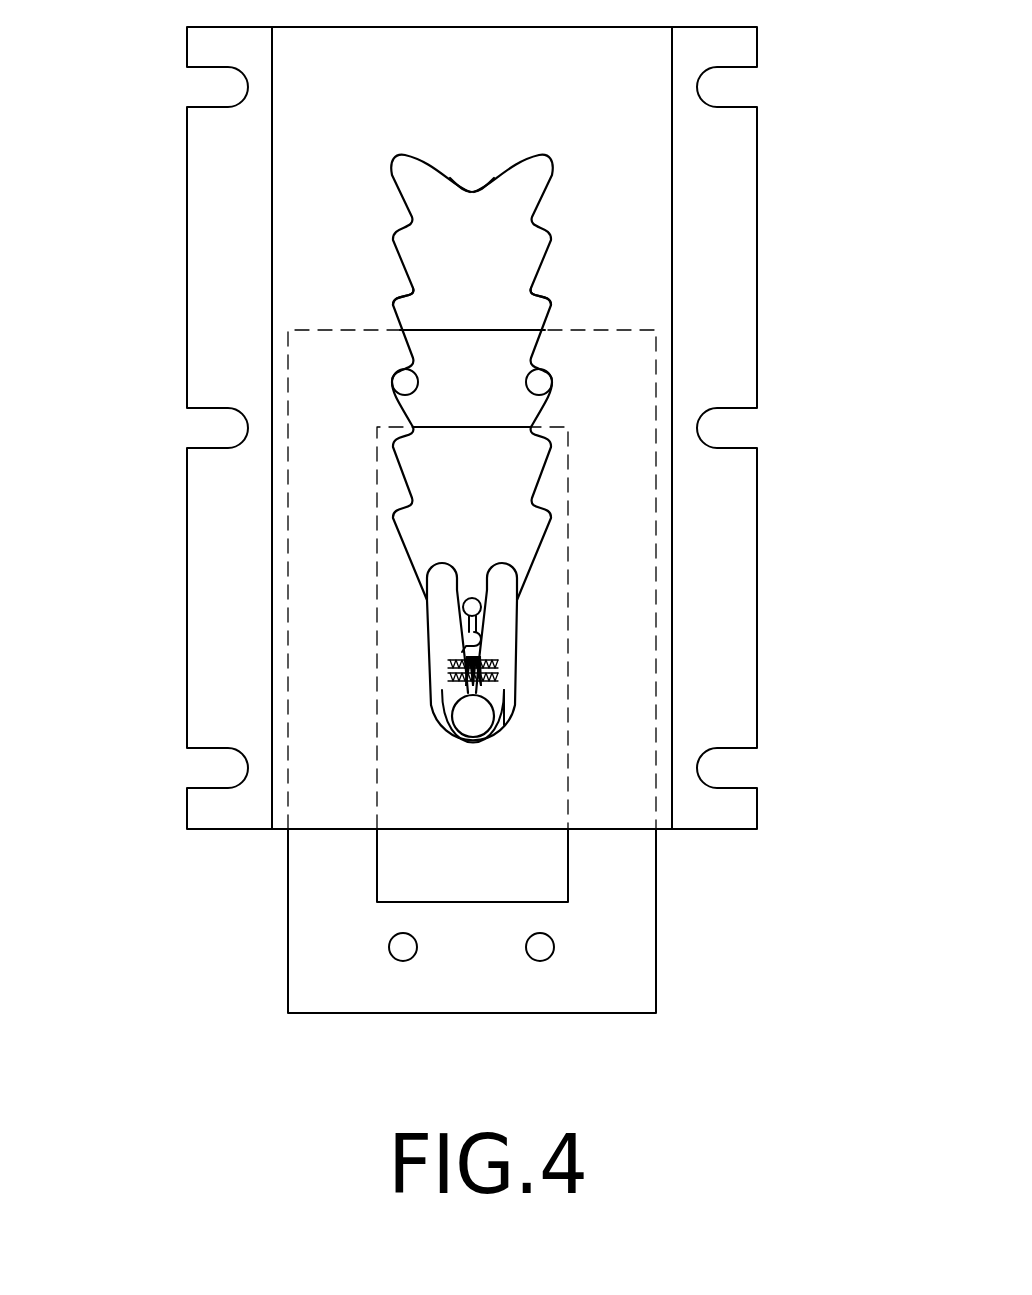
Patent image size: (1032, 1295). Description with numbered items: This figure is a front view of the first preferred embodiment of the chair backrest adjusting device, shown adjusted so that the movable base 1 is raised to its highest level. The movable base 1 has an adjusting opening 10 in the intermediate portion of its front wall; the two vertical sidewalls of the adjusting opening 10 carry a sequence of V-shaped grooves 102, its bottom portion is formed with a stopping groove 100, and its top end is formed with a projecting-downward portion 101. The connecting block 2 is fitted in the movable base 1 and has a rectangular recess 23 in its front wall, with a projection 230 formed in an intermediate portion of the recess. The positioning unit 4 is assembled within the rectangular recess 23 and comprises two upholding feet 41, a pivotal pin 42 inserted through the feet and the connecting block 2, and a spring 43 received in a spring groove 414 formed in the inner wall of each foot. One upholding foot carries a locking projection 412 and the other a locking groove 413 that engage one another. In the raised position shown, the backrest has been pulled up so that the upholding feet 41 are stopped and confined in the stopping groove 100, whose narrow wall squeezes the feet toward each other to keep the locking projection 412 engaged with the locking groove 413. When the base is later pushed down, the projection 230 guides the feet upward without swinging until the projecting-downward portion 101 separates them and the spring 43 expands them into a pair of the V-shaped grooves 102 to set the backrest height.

The movable base 1 is at (723, 177).
The connecting block 2 is at (637, 964).
The rectangular recess 23 is at (543, 872).
The projection 230 is at (472, 598).
The adjusting opening 10 is at (498, 277).
The projecting-downward portion 101 is at (472, 192).
The V-shaped grooves 102 is at (397, 298).
The positioning unit 4 is at (505, 557).
The upholding feet 41 is at (445, 580).
The locking projection 412 is at (465, 643).
The locking groove 413 is at (487, 640).
The spring groove 414 is at (452, 672).
The spring 43 is at (470, 655).
The pivotal pin 42 is at (472, 716).
The stopping groove 100 is at (515, 723).